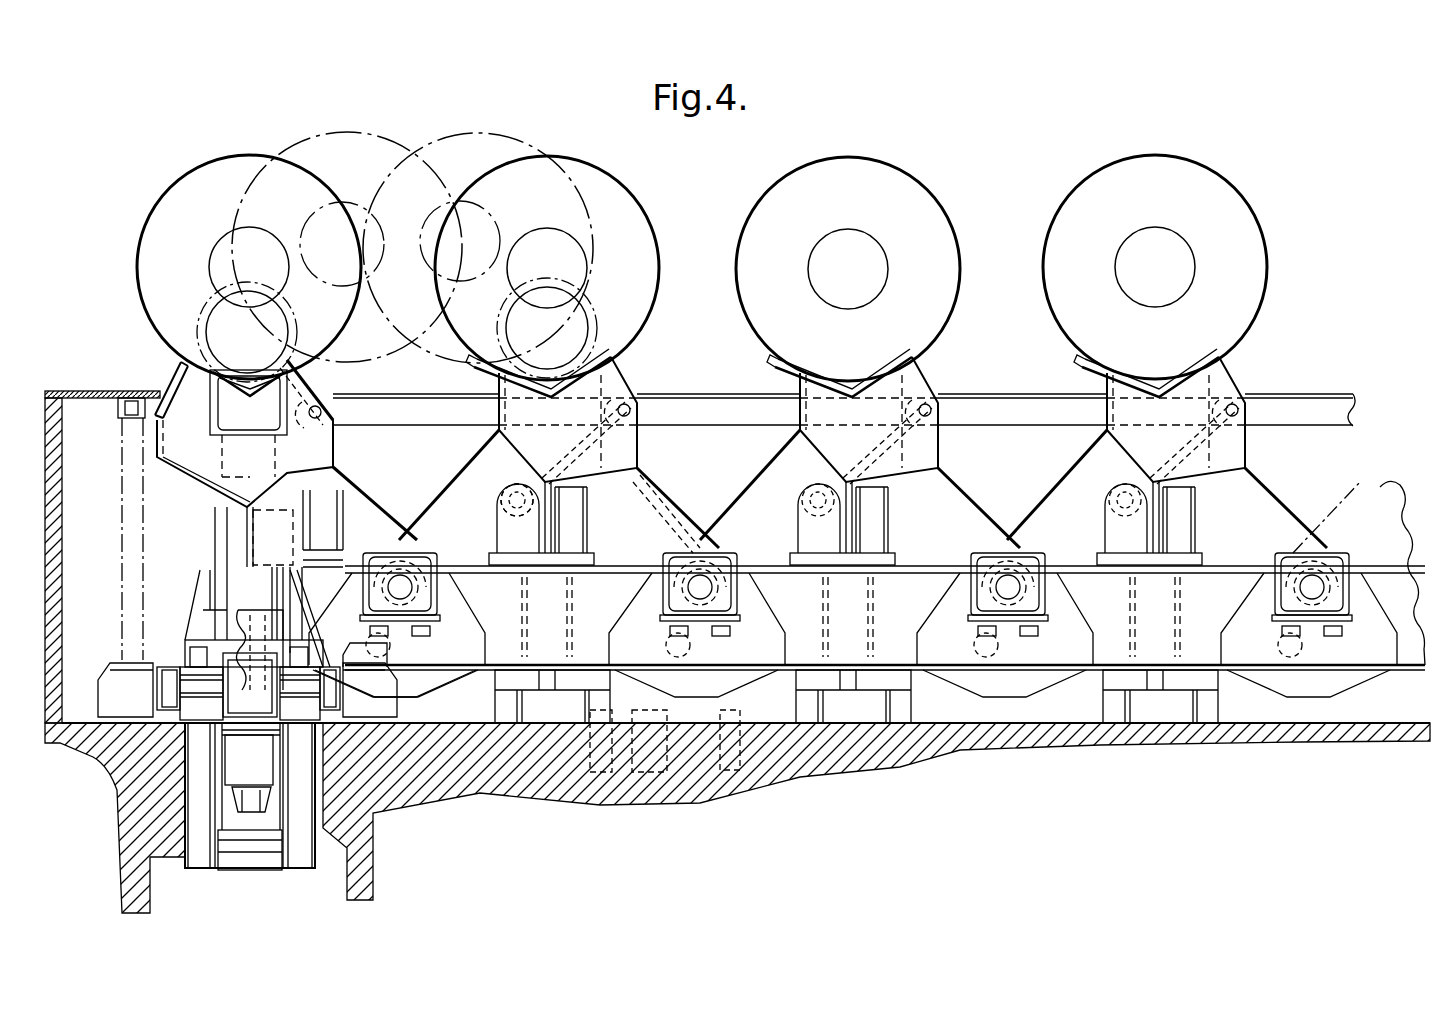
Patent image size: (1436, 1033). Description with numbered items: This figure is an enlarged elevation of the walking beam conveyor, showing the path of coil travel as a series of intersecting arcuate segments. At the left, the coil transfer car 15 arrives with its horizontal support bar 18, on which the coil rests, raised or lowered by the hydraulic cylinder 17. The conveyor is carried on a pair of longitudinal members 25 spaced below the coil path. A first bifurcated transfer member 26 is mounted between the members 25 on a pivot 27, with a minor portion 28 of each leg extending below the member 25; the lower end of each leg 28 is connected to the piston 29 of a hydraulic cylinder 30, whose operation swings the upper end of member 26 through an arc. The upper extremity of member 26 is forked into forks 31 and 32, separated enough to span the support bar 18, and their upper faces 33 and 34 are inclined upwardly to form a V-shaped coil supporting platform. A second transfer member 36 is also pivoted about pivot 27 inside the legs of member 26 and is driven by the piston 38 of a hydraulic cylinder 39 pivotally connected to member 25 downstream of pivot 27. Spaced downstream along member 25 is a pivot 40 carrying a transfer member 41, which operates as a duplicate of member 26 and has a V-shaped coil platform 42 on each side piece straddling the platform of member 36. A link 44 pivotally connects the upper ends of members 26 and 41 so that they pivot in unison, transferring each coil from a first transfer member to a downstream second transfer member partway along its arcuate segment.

The coil transfer car 15 is at (190, 597).
The hydraulic cylinder 17 is at (253, 762).
The horizontal support bar 18 is at (237, 410).
The longitudinal member 25 is at (884, 640).
The first bifurcated transfer member 26 is at (350, 512).
The pivot 27 is at (400, 585).
The leg minor portion 28 is at (467, 698).
The piston 29 is at (585, 700).
The hydraulic cylinder 30 is at (720, 800).
The fork 31 is at (165, 385).
The fork 32 is at (303, 390).
The upper face 33 is at (158, 326).
The upper face 34 is at (318, 339).
The second transfer member 36 is at (500, 462).
The piston 38 is at (453, 490).
The hydraulic cylinder 39 is at (583, 640).
The pivot 40 is at (702, 580).
The transfer member 41 is at (647, 512).
The V-shaped coil platform 42 is at (587, 352).
The link 44 is at (462, 413).